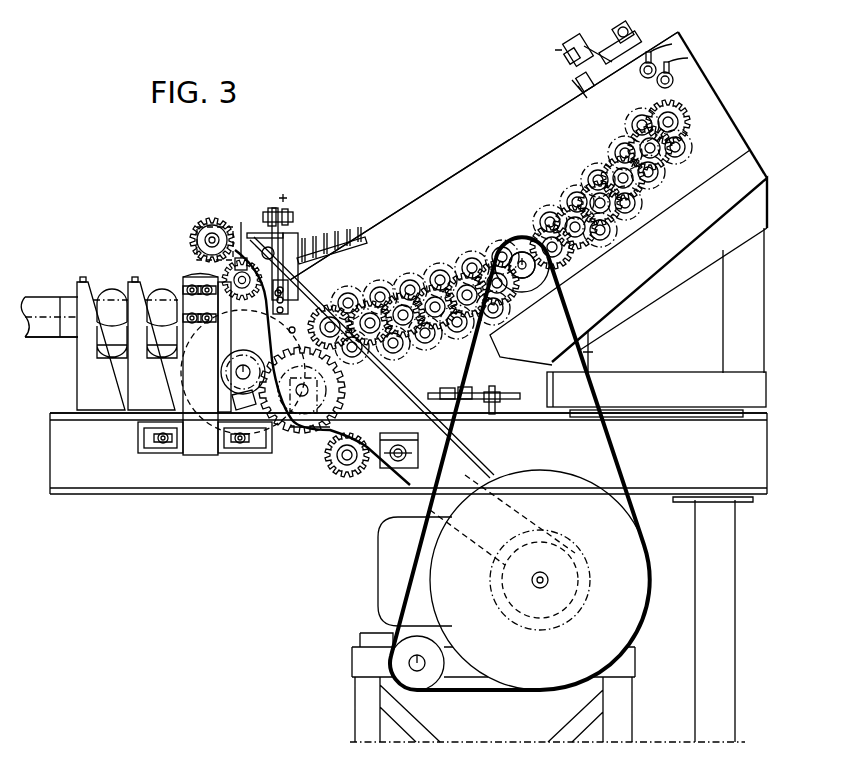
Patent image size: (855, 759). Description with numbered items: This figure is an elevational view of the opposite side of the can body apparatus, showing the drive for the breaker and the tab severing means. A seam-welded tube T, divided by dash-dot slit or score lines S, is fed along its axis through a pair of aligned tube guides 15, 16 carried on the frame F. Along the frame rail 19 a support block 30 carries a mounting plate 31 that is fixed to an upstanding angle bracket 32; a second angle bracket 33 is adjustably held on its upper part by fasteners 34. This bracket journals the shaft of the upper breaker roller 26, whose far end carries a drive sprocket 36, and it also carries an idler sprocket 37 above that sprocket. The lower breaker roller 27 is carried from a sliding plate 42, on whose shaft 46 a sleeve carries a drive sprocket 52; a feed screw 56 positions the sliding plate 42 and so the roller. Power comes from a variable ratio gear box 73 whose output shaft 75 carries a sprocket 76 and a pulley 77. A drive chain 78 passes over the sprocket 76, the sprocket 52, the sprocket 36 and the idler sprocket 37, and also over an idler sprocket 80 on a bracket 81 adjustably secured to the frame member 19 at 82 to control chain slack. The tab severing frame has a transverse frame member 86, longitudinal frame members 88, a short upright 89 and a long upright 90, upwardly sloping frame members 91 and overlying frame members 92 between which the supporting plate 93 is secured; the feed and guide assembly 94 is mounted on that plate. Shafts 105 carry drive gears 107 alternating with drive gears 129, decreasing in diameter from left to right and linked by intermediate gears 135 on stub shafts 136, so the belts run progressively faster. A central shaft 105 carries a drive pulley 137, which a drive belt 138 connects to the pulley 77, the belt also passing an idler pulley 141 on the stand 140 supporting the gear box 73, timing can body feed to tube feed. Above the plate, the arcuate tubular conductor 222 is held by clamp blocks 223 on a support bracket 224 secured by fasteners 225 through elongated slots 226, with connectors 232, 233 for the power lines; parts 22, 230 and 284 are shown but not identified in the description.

The tube T is at (41, 296).
The slit or score lines S is at (50, 338).
The frame F is at (185, 504).
The tube guide 15 is at (92, 277).
The tube guide 16 is at (140, 277).
The frame rail 19 is at (283, 494).
The leg 22 is at (697, 670).
The upper breaker roller 26 is at (238, 236).
The lower breaker roller 27 is at (206, 373).
The support block 30 is at (158, 454).
The mounting plate 31 is at (245, 453).
The angle bracket 32 is at (200, 453).
The second angle bracket 33 is at (200, 270).
The fasteners 34 is at (188, 290).
The drive sprocket 36 is at (258, 296).
The idler sprocket 37 is at (216, 228).
The sliding plate 42 is at (427, 394).
The shaft 46 is at (302, 384).
The drive sprocket 52 is at (340, 396).
The feed screw 56 is at (500, 383).
The variable ratio gear box 73 is at (377, 574).
The output shaft 75 is at (540, 590).
The sprocket 76 is at (500, 562).
The pulley 77 is at (636, 568).
The drive chain 78 is at (403, 494).
The idler sprocket 80 is at (343, 480).
The bracket 81 is at (413, 449).
The adjustable securement 82 is at (392, 447).
The transverse frame member 86 is at (764, 394).
The longitudinal frame members 88 is at (650, 388).
The short upright 89 is at (590, 352).
The long upright 90 is at (733, 307).
The sloping frame members 91 is at (632, 298).
The frame members 92 is at (718, 190).
The supporting plate 93 is at (490, 173).
The feed and guide assembly 94 is at (434, 182).
The shaft 105 is at (520, 262).
The drive gear 107 is at (329, 315).
The drive gear 129 is at (382, 297).
The intermediate gears 135 is at (351, 287).
The stub shafts 136 is at (622, 153).
The drive pulley 137 is at (510, 267).
The drive belt 138 is at (626, 482).
The stand 140 is at (358, 706).
The idler pulley 141 is at (426, 680).
The tubular conductor 222 is at (338, 240).
The clamp blocks 223 is at (299, 246).
The support bracket 224 is at (632, 48).
The fasteners 225 is at (658, 86).
The elongated slots 226 is at (672, 44).
The bolt 230 is at (257, 230).
The first connector 232 is at (284, 232).
The second connector 233 is at (600, 44).
The block 284 is at (628, 24).